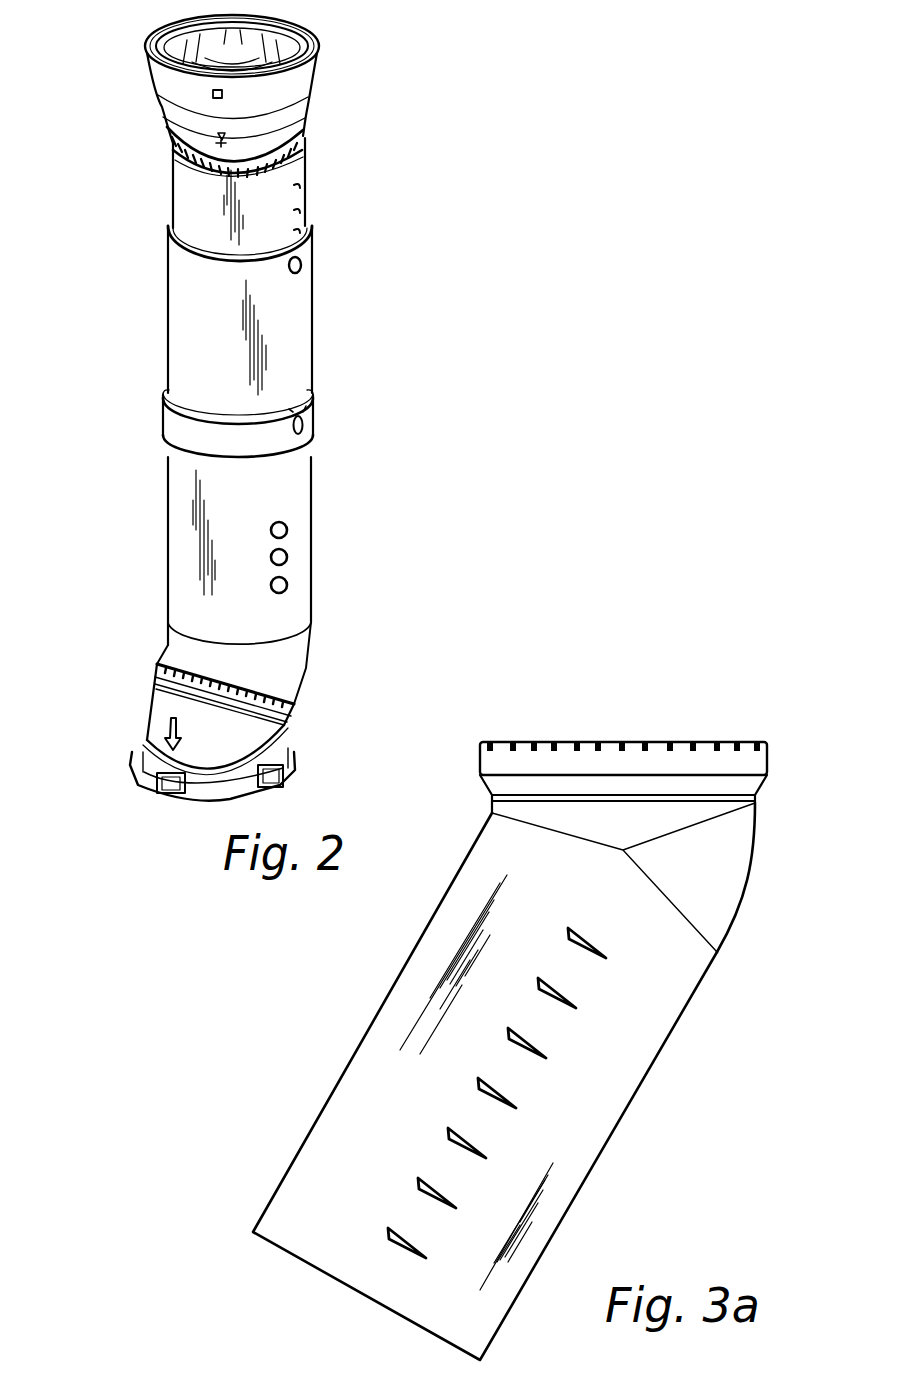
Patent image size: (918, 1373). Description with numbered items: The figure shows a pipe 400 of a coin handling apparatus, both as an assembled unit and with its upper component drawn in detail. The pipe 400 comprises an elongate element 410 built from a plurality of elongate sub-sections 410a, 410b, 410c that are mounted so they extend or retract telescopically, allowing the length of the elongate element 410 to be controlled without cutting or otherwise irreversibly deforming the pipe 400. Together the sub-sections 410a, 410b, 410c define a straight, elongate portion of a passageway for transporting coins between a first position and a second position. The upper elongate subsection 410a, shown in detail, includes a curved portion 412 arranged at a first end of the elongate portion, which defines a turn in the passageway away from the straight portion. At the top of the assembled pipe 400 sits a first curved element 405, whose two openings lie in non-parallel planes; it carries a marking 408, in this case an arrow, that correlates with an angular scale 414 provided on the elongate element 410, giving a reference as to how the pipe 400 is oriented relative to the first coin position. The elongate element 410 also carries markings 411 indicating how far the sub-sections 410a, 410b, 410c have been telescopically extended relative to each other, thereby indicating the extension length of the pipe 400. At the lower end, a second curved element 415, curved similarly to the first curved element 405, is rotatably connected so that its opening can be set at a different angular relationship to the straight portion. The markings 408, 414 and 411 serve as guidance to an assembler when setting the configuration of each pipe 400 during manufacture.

In FIG. 2, the pipe 400 is at (463, 143).
In FIG. 2, the first curved element 405 is at (283, 94).
In FIG. 2, the marking 408 is at (210, 151).
In FIG. 2, the elongate element 410 is at (380, 342).
In FIG. 2, the upper elongate subsection 410a is at (196, 212).
In FIG. 3a, the upper elongate subsection 410a is at (758, 941).
In FIG. 2, the elongate sub-section 410b is at (174, 360).
In FIG. 2, the lower elongate subsection 410c is at (172, 552).
In FIG. 2, the second curved element 415 is at (167, 712).
In FIG. 3a, the angular scale 414 is at (747, 745).
In FIG. 3a, the curved portion 412 is at (735, 826).
In FIG. 3a, the markings 411 is at (566, 1045).